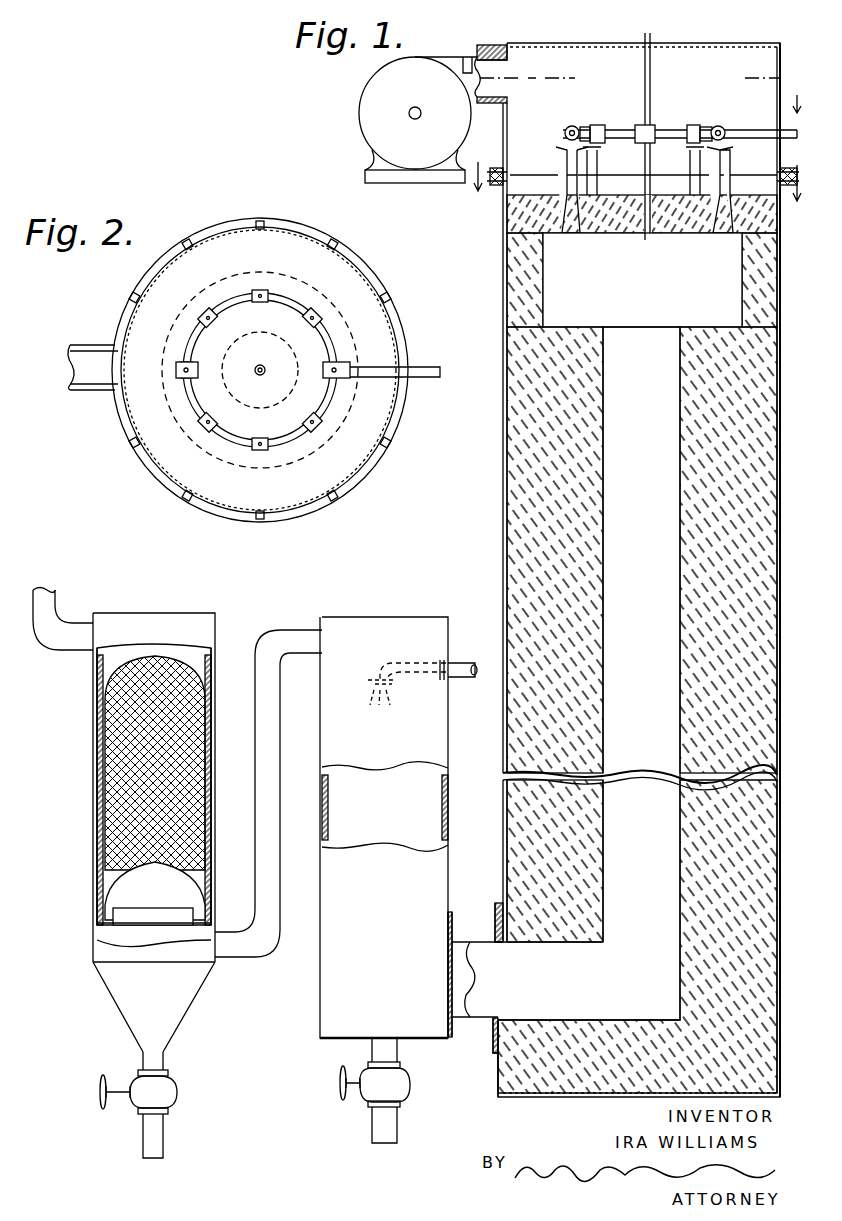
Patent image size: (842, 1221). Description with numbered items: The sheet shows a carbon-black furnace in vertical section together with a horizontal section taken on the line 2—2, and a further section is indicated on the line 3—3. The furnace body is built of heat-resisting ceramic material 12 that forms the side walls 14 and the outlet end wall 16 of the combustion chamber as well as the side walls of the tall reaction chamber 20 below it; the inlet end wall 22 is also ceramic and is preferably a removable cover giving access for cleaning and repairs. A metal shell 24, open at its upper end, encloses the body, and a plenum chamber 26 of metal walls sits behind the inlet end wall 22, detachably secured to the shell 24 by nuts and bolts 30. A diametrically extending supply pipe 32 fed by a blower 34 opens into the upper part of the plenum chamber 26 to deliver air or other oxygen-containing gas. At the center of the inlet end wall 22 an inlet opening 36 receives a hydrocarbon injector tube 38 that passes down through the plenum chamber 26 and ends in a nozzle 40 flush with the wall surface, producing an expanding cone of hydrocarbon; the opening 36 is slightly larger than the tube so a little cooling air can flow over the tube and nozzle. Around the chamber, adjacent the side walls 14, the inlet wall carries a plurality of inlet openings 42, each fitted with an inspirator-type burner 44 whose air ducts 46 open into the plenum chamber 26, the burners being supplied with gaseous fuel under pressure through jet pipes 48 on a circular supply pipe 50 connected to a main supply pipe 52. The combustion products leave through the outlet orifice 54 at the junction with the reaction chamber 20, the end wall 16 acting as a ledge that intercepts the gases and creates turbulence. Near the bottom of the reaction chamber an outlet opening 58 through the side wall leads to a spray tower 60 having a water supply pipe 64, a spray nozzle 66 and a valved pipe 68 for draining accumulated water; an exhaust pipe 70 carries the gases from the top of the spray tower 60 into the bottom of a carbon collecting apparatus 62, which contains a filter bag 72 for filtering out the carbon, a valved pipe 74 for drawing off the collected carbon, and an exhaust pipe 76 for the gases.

In FIG. 1, the section line 2— 2 is at (626, 72).
In FIG. 1, the section line 3— 3 is at (639, 168).
In FIG. 1, the heat-resisting ceramic material 12 is at (515, 347).
In FIG. 1, the side walls 14 is at (548, 284).
In FIG. 2, the side walls 14 is at (292, 450).
In FIG. 1, the outlet end wall 16 is at (582, 307).
In FIG. 1, the reaction chamber 20 is at (589, 673).
In FIG. 2, the reaction chamber 20 is at (250, 322).
In FIG. 1, the inlet end wall 22 is at (618, 238).
In FIG. 2, the inlet end wall 22 is at (160, 446).
In FIG. 1, the metal shell 24 is at (505, 470).
In FIG. 1, the plenum chamber 26 is at (492, 133).
In FIG. 2, the plenum chamber 26 is at (124, 332).
In FIG. 1, the nuts and bolts 30 is at (495, 190).
In FIG. 1, the supply pipe 32 is at (503, 54).
In FIG. 2, the supply pipe 32 is at (92, 383).
In FIG. 1, the blower 34 is at (366, 95).
In FIG. 1, the inlet opening 36 is at (652, 192).
In FIG. 2, the inlet opening 36 is at (252, 380).
In FIG. 1, the hydrocarbon injector tube 38 is at (652, 80).
In FIG. 2, the hydrocarbon injector tube 38 is at (268, 368).
In FIG. 1, the nozzle 40 is at (650, 240).
In FIG. 1, the inlet openings 42 is at (565, 233).
In FIG. 1, the burner 44 is at (570, 160).
In FIG. 1, the air ducts 46 is at (565, 133).
In FIG. 1, the jet pipes 48 is at (722, 140).
In FIG. 2, the jet pipes 48 is at (185, 368).
In FIG. 1, the circular supply pipe 50 is at (655, 125).
In FIG. 2, the circular supply pipe 50 is at (330, 345).
In FIG. 1, the main supply pipe 52 is at (762, 130).
In FIG. 2, the main supply pipe 52 is at (428, 380).
In FIG. 1, the outlet orifice 54 is at (625, 318).
In FIG. 1, the outlet opening 58 is at (561, 1002).
In FIG. 1, the spray tower 60 is at (440, 742).
In FIG. 1, the carbon collecting apparatus 62 is at (210, 640).
In FIG. 1, the water supply pipe 64 is at (472, 665).
In FIG. 1, the spray nozzle 66 is at (400, 690).
In FIG. 1, the valved pipe 68 is at (382, 1117).
In FIG. 1, the exhaust pipe 70 is at (276, 713).
In FIG. 1, the filter bag 72 is at (105, 782).
In FIG. 1, the valved pipe 74 is at (142, 1135).
In FIG. 1, the exhaust pipe 76 is at (65, 605).